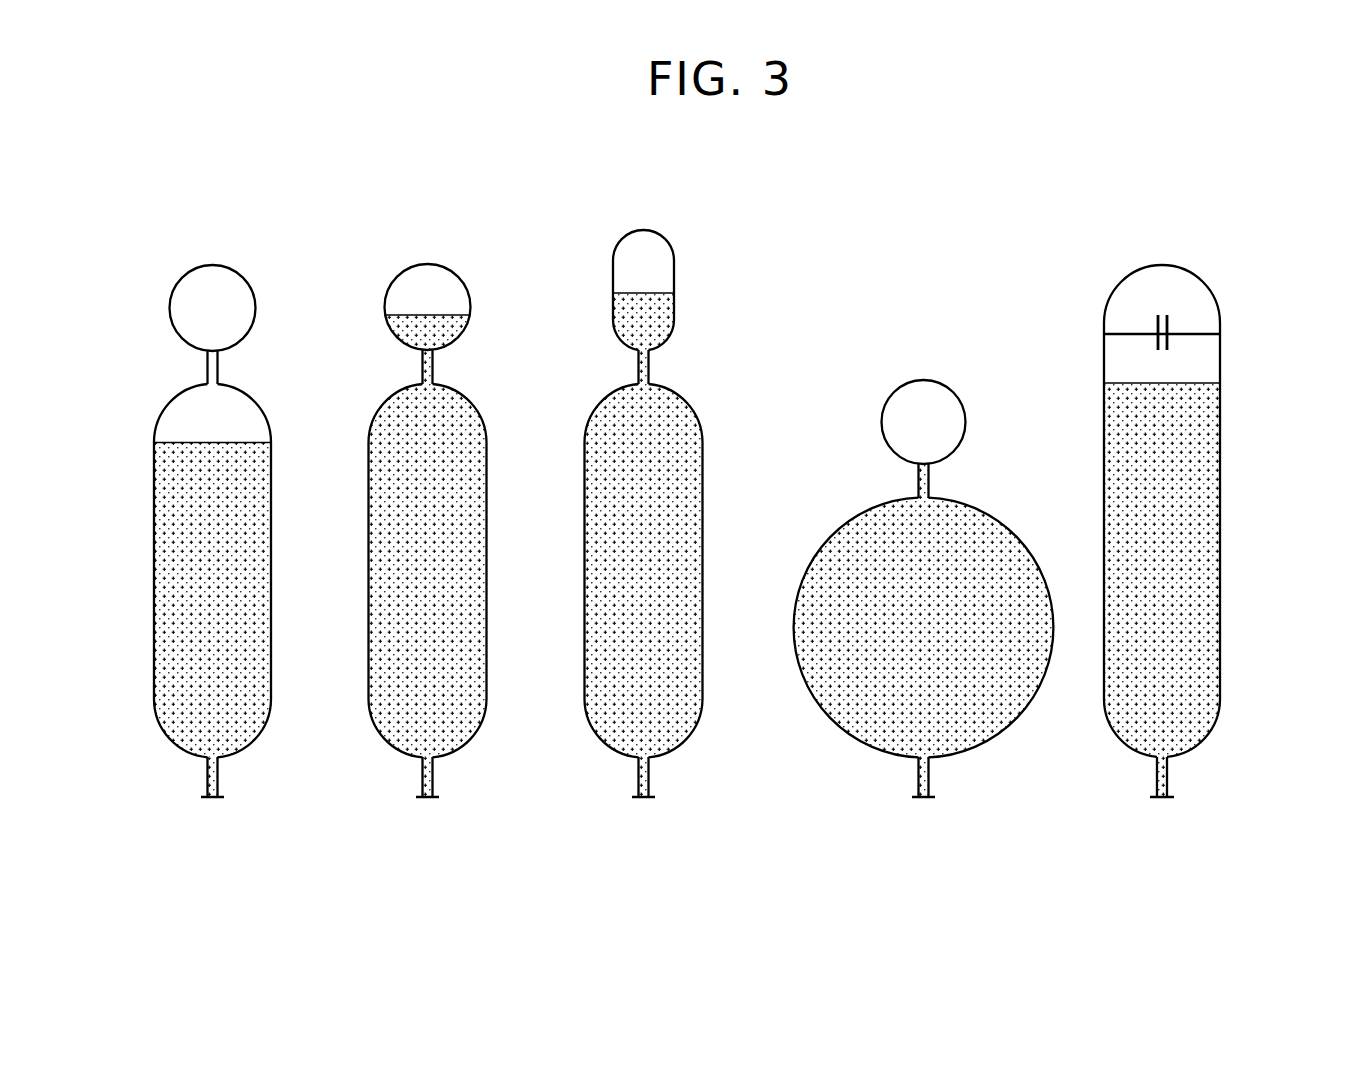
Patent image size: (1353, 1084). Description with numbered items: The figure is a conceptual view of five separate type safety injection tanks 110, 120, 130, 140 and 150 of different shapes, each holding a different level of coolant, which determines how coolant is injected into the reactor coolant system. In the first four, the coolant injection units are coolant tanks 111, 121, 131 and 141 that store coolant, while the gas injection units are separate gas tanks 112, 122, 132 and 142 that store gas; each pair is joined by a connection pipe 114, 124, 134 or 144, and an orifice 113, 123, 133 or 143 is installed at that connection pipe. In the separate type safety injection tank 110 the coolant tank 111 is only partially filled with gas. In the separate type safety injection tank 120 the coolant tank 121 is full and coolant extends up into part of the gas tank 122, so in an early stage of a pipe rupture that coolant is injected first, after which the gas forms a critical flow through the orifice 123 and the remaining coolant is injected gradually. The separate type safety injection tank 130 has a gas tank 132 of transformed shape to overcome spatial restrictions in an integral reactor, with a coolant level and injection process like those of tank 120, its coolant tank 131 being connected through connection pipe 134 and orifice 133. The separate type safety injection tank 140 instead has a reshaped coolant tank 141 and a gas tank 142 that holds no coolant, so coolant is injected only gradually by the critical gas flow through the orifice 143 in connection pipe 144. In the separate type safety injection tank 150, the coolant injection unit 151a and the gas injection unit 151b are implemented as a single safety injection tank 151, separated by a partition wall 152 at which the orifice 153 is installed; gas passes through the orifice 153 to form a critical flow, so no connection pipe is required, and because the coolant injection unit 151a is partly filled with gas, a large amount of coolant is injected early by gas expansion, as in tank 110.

The separate type safety injection tank 110 is at (231, 250).
The coolant tank 111 is at (154, 583).
The gas tank 112 is at (171, 304).
The orifice 113 is at (207, 364).
The connection pipe 114 is at (218, 370).
The separate type safety injection tank 120 is at (455, 250).
The coolant tank 121 is at (368, 570).
The gas tank 122 is at (386, 303).
The orifice 123 is at (422, 364).
The connection pipe 124 is at (433, 370).
The separate type safety injection tank 130 is at (670, 215).
The coolant tank 131 is at (584, 570).
The gas tank 132 is at (613, 280).
The orifice 133 is at (638, 364).
The connection pipe 134 is at (649, 370).
The separate type safety injection tank 140 is at (940, 360).
The coolant tank 141 is at (824, 541).
The gas tank 142 is at (882, 410).
The orifice 143 is at (918, 478).
The connection pipe 144 is at (929, 484).
The separate type safety injection tank 150 is at (1190, 258).
The safety injection tank 151 is at (1223, 531).
The coolant injection unit 151a is at (1203, 585).
The gas injection unit 151b is at (1212, 306).
The partition wall 152 is at (1130, 334).
The orifice 153 is at (1152, 340).